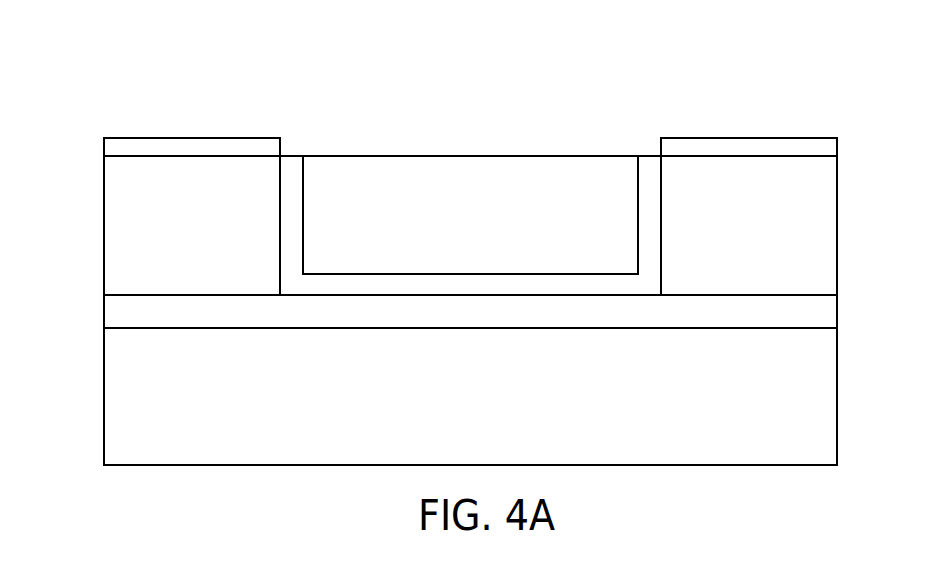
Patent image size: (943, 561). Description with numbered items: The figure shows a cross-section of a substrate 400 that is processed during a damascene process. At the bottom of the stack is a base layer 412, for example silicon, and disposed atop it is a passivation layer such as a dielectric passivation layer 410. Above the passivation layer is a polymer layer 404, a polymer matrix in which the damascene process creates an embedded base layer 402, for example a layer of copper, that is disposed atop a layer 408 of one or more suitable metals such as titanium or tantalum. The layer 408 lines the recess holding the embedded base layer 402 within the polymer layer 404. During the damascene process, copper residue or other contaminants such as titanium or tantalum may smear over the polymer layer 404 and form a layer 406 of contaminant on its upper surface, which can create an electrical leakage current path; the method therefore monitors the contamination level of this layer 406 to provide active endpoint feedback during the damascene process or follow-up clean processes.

The substrate 400 is at (438, 235).
The embedded base layer 402 is at (403, 155).
The polymer layer 404 is at (104, 186).
The layer of contaminant 406 is at (192, 138).
The layer of one or more suitable metals 408 is at (296, 156).
The dielectric passivation layer 410 is at (104, 312).
The base layer 412 is at (104, 404).